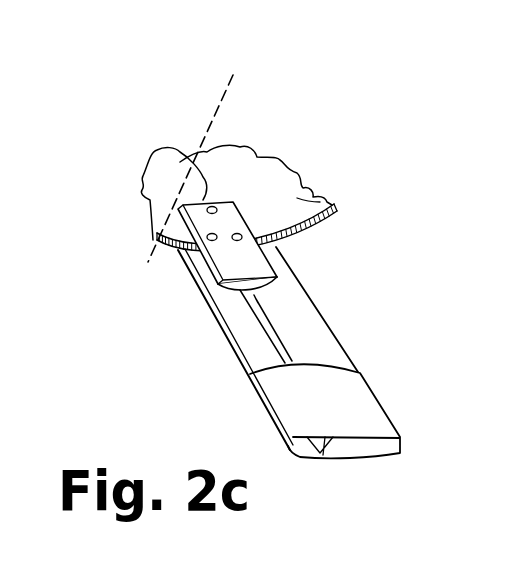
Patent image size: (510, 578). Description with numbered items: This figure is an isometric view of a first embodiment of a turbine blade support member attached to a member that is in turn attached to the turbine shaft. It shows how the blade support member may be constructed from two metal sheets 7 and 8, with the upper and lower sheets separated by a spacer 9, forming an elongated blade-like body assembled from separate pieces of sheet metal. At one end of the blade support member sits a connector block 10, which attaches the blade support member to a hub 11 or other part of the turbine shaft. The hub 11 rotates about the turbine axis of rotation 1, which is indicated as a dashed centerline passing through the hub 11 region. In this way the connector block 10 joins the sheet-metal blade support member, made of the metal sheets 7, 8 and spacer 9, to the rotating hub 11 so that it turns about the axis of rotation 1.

The turbine axis of rotation 1 is at (224, 93).
The metal sheet 7 is at (241, 351).
The metal sheet 8 is at (352, 393).
The spacer 9 is at (258, 323).
The connector block 10 is at (180, 162).
The hub 11 is at (330, 203).